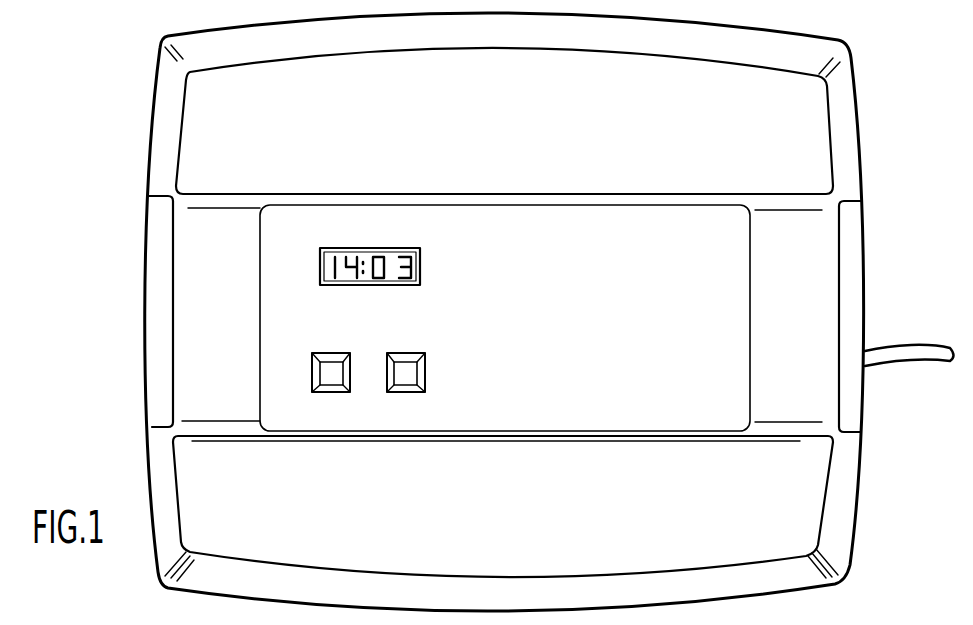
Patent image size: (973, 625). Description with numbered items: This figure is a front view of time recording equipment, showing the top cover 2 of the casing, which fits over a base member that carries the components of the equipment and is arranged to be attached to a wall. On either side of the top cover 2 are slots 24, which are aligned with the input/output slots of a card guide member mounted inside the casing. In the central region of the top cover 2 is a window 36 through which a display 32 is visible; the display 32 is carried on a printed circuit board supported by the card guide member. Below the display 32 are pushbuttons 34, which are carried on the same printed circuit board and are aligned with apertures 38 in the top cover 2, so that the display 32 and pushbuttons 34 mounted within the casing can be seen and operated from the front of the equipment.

The top cover 2 is at (810, 488).
The slots 24 is at (158, 375).
The display 32 is at (393, 250).
The pushbuttons 34 is at (323, 365).
The window 36 is at (321, 247).
The apertures 38 is at (392, 411).